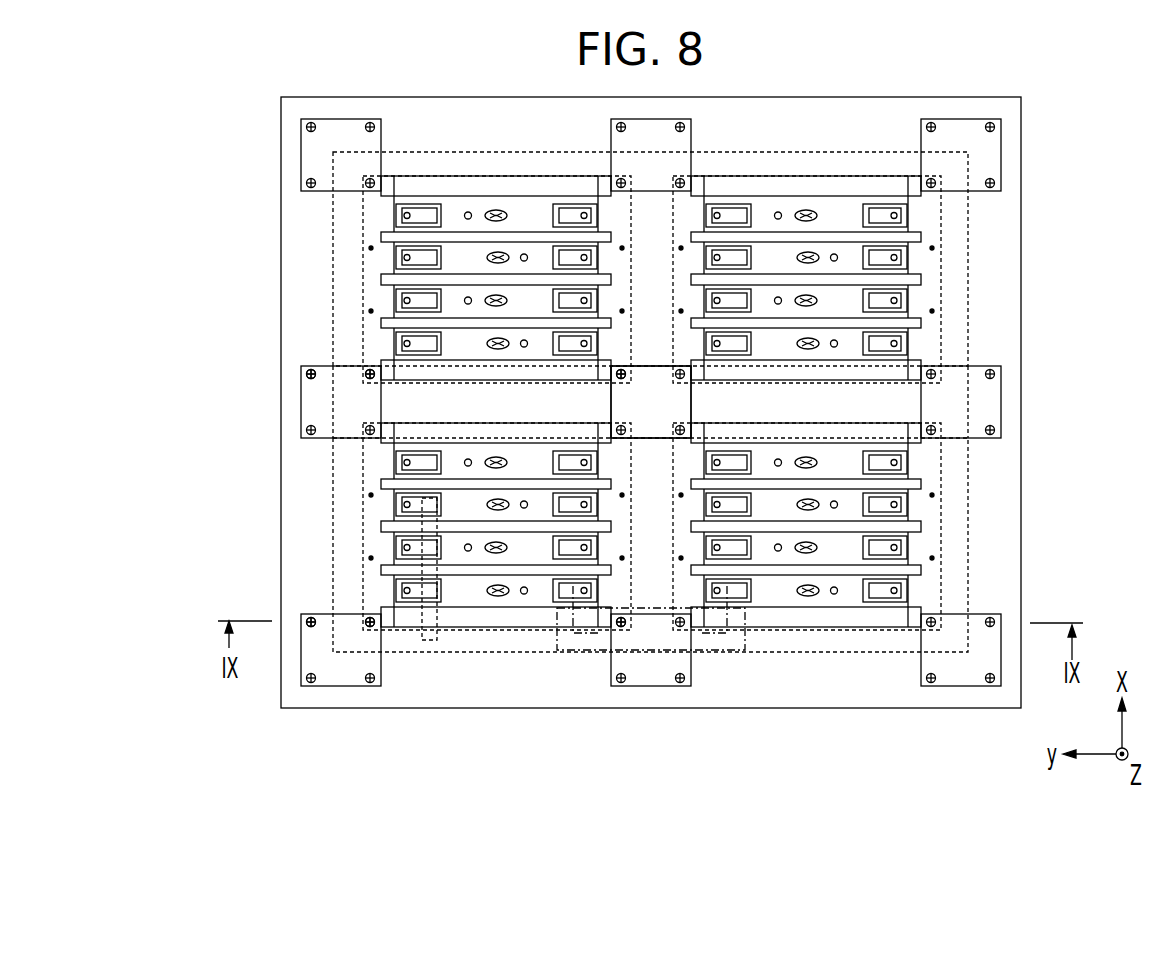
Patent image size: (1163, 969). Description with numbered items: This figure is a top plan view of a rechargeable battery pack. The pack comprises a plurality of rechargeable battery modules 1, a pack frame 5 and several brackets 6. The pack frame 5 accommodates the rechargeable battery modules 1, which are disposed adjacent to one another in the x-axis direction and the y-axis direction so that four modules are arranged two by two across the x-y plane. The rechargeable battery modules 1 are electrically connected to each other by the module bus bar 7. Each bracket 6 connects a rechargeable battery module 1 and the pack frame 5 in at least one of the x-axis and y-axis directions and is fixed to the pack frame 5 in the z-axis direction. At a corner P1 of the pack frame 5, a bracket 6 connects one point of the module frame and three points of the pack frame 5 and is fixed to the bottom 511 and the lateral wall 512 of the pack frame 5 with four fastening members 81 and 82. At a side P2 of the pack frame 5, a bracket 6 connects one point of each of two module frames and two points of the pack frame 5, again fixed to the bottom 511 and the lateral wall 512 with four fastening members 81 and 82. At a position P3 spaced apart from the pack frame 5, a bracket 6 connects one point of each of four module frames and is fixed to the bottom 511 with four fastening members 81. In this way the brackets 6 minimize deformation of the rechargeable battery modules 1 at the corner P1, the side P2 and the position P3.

The rechargeable battery module 1 is at (528, 628).
The pack frame 5 is at (450, 646).
The bottom 511 is at (418, 641).
The lateral wall 512 is at (483, 686).
The bracket 6 is at (341, 119).
The module bus bar 7 is at (717, 651).
The fastening member 81 is at (368, 371).
The fastening member 82 is at (301, 371).
The corner P1 is at (262, 160).
The side P2 is at (262, 410).
The position spaced apart from the pack frame P3 is at (598, 402).